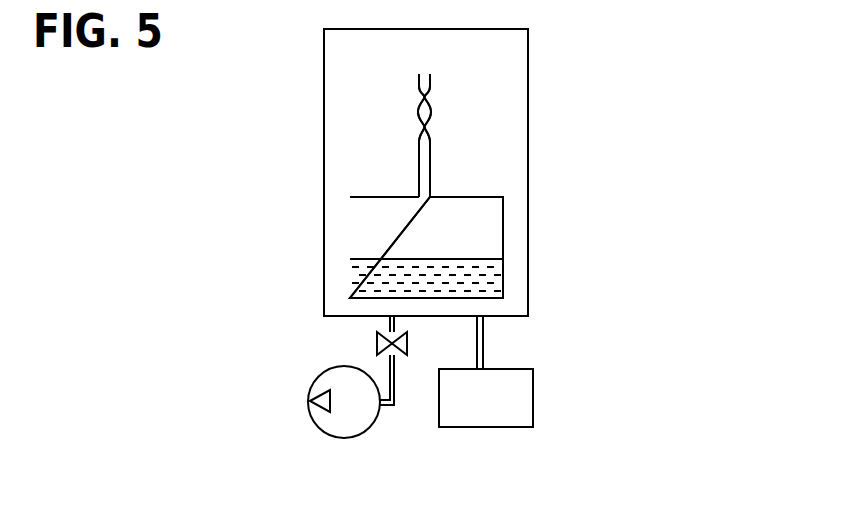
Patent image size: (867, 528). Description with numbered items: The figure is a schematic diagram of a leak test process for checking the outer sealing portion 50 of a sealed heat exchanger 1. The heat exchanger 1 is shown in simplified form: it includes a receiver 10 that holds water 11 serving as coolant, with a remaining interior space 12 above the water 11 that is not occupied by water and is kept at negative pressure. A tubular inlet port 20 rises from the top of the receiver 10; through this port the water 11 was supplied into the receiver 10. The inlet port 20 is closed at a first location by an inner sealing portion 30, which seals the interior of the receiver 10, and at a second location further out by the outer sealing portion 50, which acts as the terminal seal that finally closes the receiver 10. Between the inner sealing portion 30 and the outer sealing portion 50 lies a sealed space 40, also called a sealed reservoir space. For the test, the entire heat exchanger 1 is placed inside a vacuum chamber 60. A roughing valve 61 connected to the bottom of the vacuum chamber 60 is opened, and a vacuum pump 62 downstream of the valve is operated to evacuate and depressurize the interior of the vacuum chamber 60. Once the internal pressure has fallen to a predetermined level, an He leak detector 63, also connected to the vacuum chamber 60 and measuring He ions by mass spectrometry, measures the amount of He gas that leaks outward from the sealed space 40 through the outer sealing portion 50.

The heat exchanger 1 is at (495, 185).
The receiver 10 is at (503, 243).
The water 11 is at (493, 275).
The remaining interior space 12 is at (487, 220).
The tubular inlet port 20 is at (438, 130).
The inner sealing portion 30 is at (418, 128).
The sealed space 40 is at (420, 112).
The outer sealing portion 50 is at (418, 97).
The vacuum chamber 60 is at (528, 68).
The roughing valve 61 is at (380, 343).
The vacuum pump 62 is at (353, 416).
The He leak detector 63 is at (488, 410).